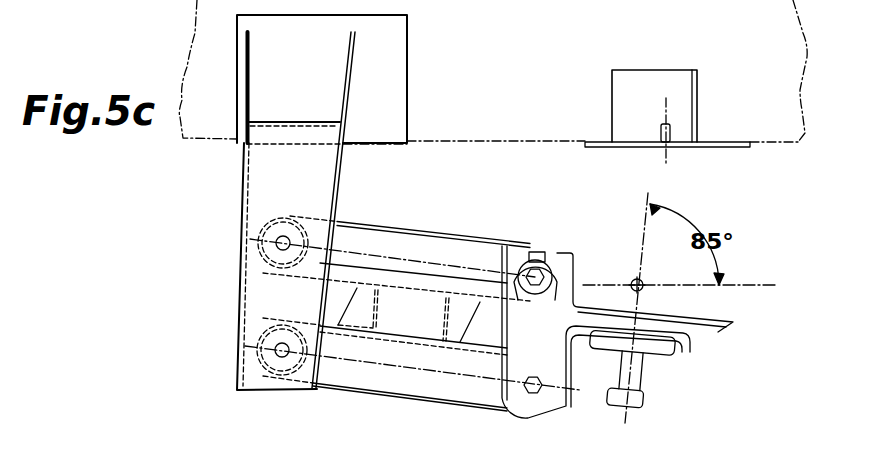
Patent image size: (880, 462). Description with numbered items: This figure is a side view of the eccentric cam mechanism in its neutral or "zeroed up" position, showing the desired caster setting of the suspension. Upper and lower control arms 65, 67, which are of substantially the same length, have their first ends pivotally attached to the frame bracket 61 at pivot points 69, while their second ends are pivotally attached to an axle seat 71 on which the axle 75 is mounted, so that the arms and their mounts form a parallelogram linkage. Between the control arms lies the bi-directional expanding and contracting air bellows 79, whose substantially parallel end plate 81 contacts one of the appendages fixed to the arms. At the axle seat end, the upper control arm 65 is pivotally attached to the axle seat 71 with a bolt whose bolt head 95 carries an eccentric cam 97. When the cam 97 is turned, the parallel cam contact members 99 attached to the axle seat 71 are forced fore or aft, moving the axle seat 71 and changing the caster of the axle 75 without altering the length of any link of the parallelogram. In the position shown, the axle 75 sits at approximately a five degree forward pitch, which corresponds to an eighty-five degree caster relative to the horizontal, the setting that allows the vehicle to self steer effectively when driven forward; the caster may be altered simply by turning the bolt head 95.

The frame bracket 61 is at (263, 175).
The upper control arm 65 is at (425, 247).
The lower control arm 67 is at (402, 388).
The pivot points 69 is at (280, 343).
The axle seat 71 is at (550, 337).
The axle 75 is at (638, 397).
The air bellows 79 is at (416, 317).
The end plate 81 is at (358, 318).
The bolt head 95 is at (543, 272).
The eccentric cam 97 is at (538, 252).
The cam contact members 99 is at (536, 345).